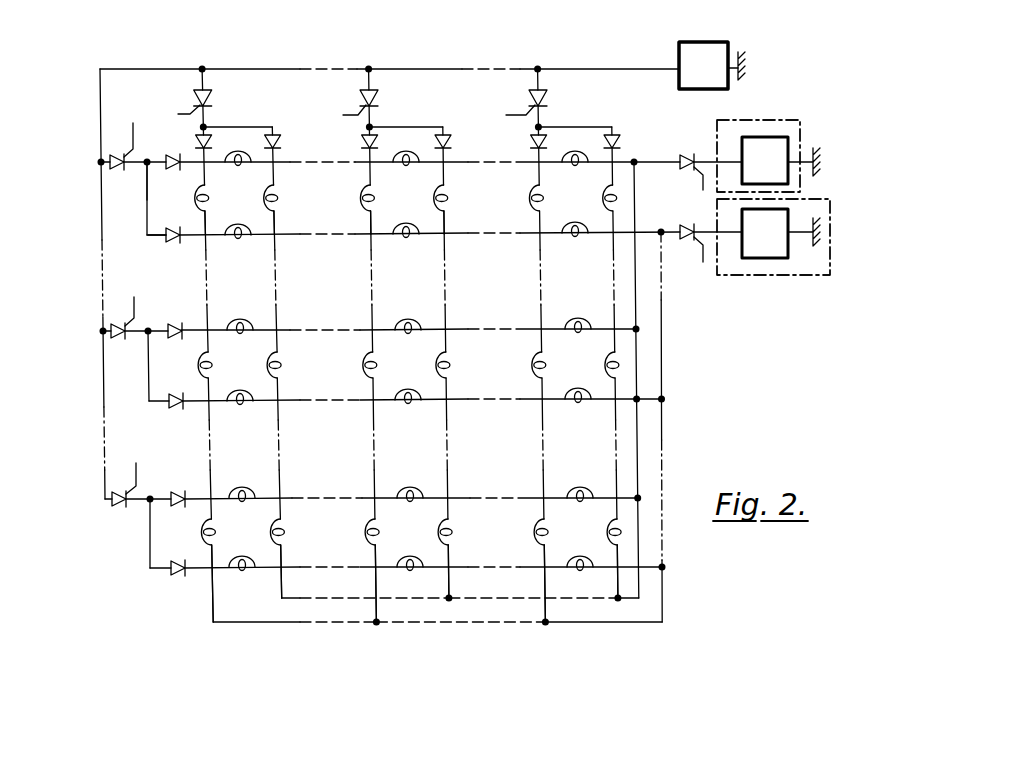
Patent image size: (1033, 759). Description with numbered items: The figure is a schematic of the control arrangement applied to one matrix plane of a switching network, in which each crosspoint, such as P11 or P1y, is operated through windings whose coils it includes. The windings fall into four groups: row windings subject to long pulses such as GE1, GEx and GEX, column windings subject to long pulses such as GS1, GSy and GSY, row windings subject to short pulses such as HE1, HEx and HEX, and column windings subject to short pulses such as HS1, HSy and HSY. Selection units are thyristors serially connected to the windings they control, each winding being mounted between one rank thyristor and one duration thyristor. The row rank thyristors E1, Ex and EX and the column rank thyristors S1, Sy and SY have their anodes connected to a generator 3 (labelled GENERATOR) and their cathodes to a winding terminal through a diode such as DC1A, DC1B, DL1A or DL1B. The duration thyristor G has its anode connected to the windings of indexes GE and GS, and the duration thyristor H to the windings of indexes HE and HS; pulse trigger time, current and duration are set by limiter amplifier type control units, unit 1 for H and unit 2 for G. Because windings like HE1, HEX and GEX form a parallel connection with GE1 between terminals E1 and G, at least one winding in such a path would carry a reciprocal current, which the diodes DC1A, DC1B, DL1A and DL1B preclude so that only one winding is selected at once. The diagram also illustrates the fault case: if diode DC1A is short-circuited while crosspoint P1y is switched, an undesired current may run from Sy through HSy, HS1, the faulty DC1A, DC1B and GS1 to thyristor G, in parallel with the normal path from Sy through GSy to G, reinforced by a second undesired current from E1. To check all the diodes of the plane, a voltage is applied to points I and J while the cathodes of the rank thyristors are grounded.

The control unit 1 is at (771, 276).
The control unit 2 is at (772, 120).
The generator 3 is at (676, 50).
The column selection thyristor S1 is at (212, 104).
The column selection thyristor Sy is at (378, 104).
The column selection thyristor SY is at (547, 104).
The diode DC1A is at (228, 142).
The diode DC1B is at (283, 142).
The row selection thyristor E1 is at (119, 161).
The row winding GE1 is at (160, 158).
The diode DL1B is at (170, 181).
The diode DL1A is at (170, 223).
The crosspoint P11 is at (240, 209).
The crosspoint P1y is at (408, 212).
The row winding HE1 is at (152, 241).
The row winding GEx is at (171, 322).
The row selection thyristor Ex is at (121, 334).
The row winding HEx is at (160, 407).
The row winding GEX is at (170, 494).
The row selection thyristor EX is at (124, 502).
The row winding HEX is at (150, 560).
The column winding HS1 is at (209, 592).
The column winding GS1 is at (278, 590).
The column winding GSy is at (448, 585).
The column winding GSY is at (617, 585).
The column winding HSy is at (378, 617).
The column winding HSY is at (547, 617).
The test point I is at (637, 149).
The test point J is at (660, 219).
The duration selection thyristor G is at (691, 156).
The duration selection thyristor H is at (690, 249).
The generator GENERATOR is at (698, 42).